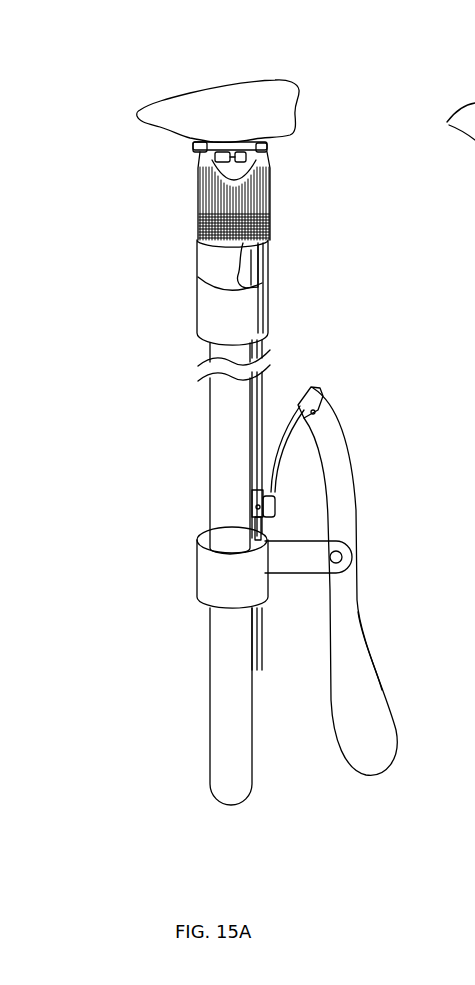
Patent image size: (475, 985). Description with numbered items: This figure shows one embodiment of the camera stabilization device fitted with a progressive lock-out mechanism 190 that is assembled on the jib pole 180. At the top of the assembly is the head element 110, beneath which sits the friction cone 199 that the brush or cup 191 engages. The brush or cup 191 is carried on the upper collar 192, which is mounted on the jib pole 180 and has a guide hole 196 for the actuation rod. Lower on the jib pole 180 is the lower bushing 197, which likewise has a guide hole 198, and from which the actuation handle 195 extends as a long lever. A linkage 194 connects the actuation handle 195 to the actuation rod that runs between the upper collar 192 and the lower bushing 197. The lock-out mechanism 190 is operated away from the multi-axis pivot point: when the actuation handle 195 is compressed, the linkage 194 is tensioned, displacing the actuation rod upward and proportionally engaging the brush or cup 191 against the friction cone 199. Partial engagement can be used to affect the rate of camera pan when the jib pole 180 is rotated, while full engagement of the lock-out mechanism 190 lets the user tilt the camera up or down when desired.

The head / seat pad 110 is at (176, 90).
The progressive lock-out mechanism 190 is at (130, 164).
The friction cone 199 is at (190, 159).
The brush or cup 191 is at (190, 199).
The upper collar 192 is at (190, 264).
The guide hole 196 is at (298, 338).
The linkage 194 is at (296, 460).
The guide hole 198 is at (282, 522).
The lower bushing 197 is at (189, 570).
The actuation handle 195 is at (392, 673).
The jib pole 180 is at (198, 718).